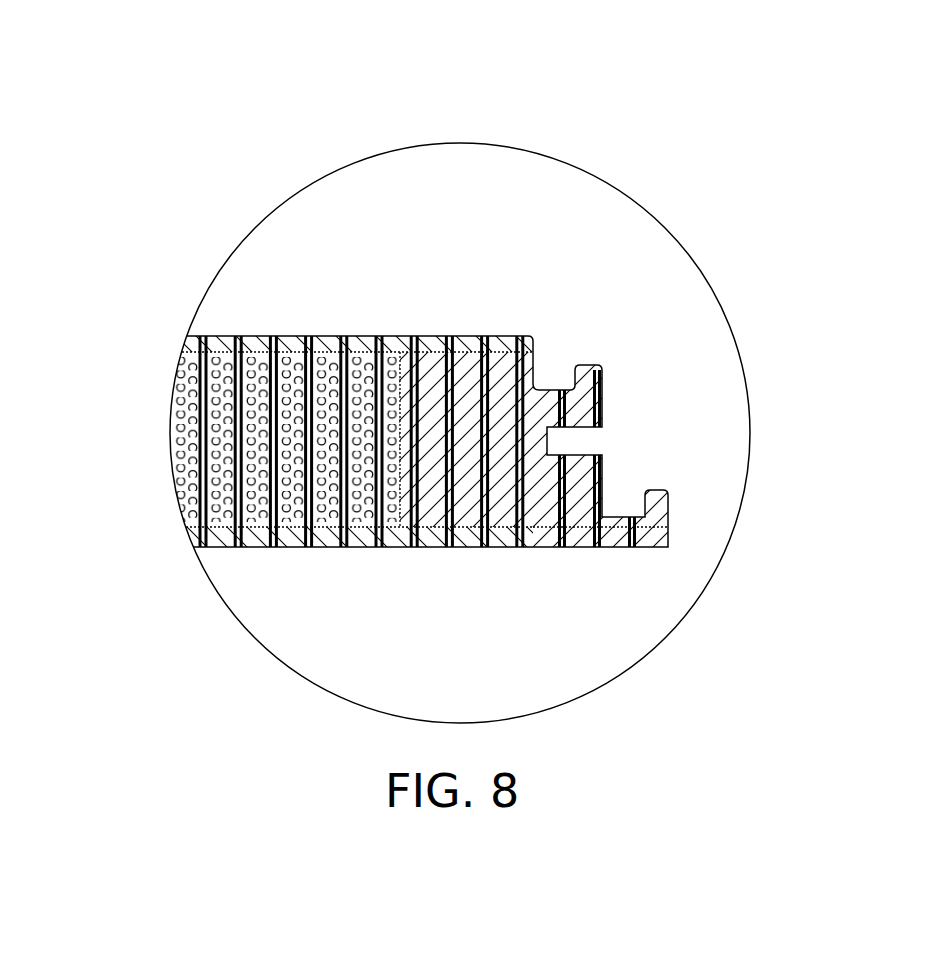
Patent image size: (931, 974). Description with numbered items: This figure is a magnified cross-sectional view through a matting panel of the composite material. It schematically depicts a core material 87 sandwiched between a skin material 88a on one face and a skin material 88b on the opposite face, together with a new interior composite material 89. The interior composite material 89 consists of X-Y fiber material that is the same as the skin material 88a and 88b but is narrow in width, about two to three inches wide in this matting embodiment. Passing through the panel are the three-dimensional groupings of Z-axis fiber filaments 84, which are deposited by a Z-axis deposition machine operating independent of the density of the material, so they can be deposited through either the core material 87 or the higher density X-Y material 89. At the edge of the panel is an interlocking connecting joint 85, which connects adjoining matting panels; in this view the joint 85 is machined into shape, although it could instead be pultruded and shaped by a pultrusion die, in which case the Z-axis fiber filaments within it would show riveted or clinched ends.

The 3-D groupings of Z-axis fiber filaments 84 is at (413, 335).
The interlocking connecting joint 85 is at (603, 407).
The core material 87 is at (222, 400).
The skin material 88a is at (292, 337).
The skin material 88b is at (288, 535).
The interior composite material 89 is at (500, 393).